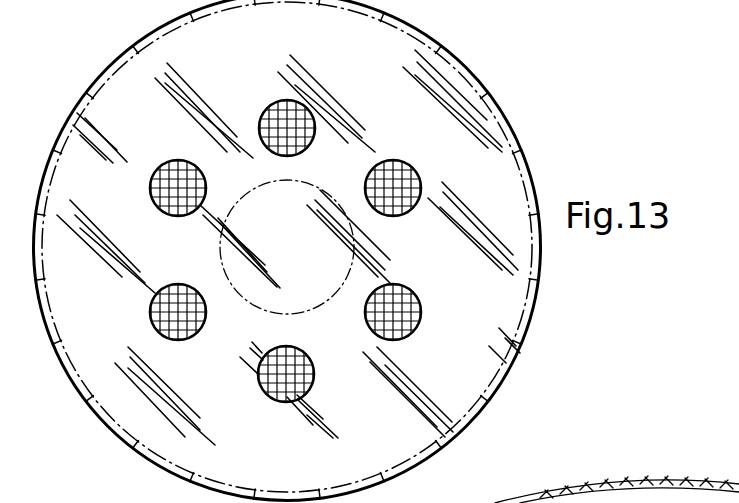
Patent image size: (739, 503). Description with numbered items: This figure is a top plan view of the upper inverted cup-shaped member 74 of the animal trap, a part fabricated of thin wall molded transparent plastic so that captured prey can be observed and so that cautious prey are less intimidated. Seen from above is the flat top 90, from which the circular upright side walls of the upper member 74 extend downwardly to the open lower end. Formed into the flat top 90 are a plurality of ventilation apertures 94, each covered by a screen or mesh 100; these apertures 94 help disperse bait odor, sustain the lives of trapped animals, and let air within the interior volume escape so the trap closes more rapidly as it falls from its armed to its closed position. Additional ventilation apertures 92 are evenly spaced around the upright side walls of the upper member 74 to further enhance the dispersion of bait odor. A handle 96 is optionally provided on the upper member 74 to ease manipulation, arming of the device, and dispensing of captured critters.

The upper inverted cup-shaped member 74 is at (468, 70).
The flat top 90 is at (503, 314).
The additional ventilation apertures 92 is at (540, 263).
The ventilation apertures 94 is at (418, 297).
The handle 96 is at (215, 253).
The screen or mesh 100 is at (400, 160).